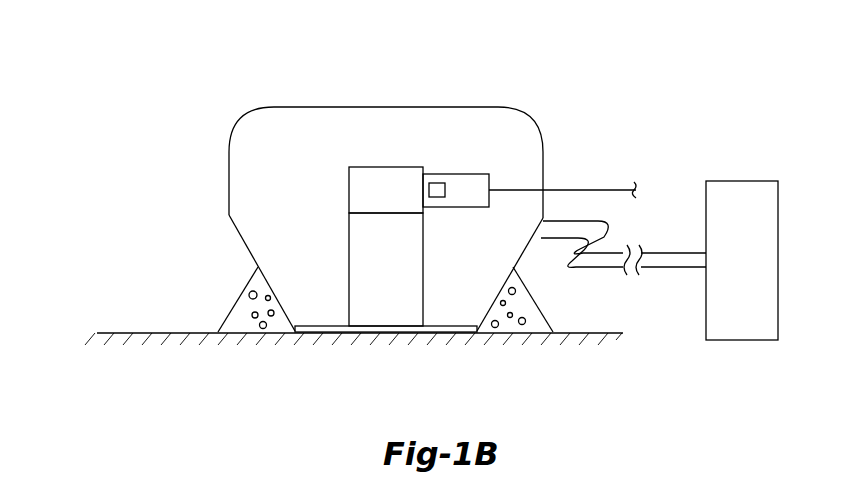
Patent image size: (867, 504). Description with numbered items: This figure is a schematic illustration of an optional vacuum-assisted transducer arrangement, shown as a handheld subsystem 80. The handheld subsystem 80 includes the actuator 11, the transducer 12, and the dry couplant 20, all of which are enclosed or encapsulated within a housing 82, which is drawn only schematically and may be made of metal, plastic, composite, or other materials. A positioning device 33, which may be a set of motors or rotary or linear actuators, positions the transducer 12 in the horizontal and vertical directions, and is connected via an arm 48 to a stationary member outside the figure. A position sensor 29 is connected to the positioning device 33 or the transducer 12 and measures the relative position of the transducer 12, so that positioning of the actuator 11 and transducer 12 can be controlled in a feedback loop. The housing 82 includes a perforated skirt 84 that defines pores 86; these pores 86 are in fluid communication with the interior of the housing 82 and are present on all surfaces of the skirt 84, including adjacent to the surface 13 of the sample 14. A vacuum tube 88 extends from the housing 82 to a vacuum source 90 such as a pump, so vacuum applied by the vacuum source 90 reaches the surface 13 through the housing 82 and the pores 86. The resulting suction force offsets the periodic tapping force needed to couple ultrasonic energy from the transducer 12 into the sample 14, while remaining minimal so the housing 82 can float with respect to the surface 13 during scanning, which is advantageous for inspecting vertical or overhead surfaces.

The handheld subsystem 80 is at (663, 51).
The housing 82 is at (387, 107).
The perforated skirt 84 is at (360, 272).
The pores 86 is at (238, 318).
The vacuum tube 88 is at (577, 232).
The vacuum source 90 is at (753, 262).
The arm 48 is at (585, 190).
The position sensor 29 is at (436, 183).
The positioning device 33 is at (474, 200).
The actuator 11 is at (397, 200).
The transducer 12 is at (396, 264).
The dry couplant 20 is at (440, 328).
The surface 13 is at (102, 322).
The sample 14 is at (398, 383).